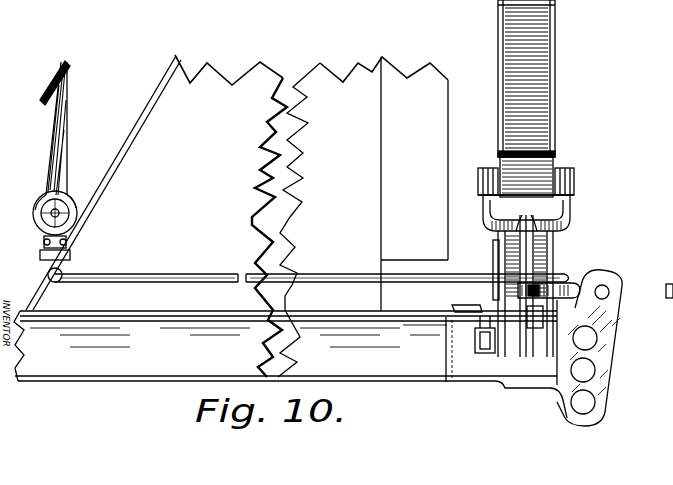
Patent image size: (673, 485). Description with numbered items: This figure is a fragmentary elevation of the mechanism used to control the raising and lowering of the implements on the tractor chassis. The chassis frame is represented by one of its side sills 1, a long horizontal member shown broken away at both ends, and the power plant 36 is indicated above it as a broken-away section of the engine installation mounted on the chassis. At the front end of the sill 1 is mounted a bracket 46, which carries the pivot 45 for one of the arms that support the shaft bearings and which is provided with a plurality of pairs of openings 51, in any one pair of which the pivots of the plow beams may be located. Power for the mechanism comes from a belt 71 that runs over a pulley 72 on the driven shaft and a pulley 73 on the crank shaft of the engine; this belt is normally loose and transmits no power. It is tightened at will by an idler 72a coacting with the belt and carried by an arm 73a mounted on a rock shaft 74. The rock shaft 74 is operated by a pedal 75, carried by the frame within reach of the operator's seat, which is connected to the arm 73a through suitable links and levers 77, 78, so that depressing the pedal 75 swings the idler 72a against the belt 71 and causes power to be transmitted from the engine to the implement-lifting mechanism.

The side sill 1 is at (415, 360).
The power plant 36 is at (346, 56).
The pivot 45 is at (606, 291).
The bracket 46 is at (602, 370).
The openings 51 is at (595, 405).
The belt 71 is at (508, 102).
The pulley 72 is at (558, 78).
The idler 72a is at (574, 182).
The pulley 73 is at (553, 250).
The arm 73a is at (497, 258).
The rock shaft 74 is at (612, 342).
The pedal 75 is at (50, 85).
The link 77 is at (236, 284).
The lever 78 is at (502, 292).